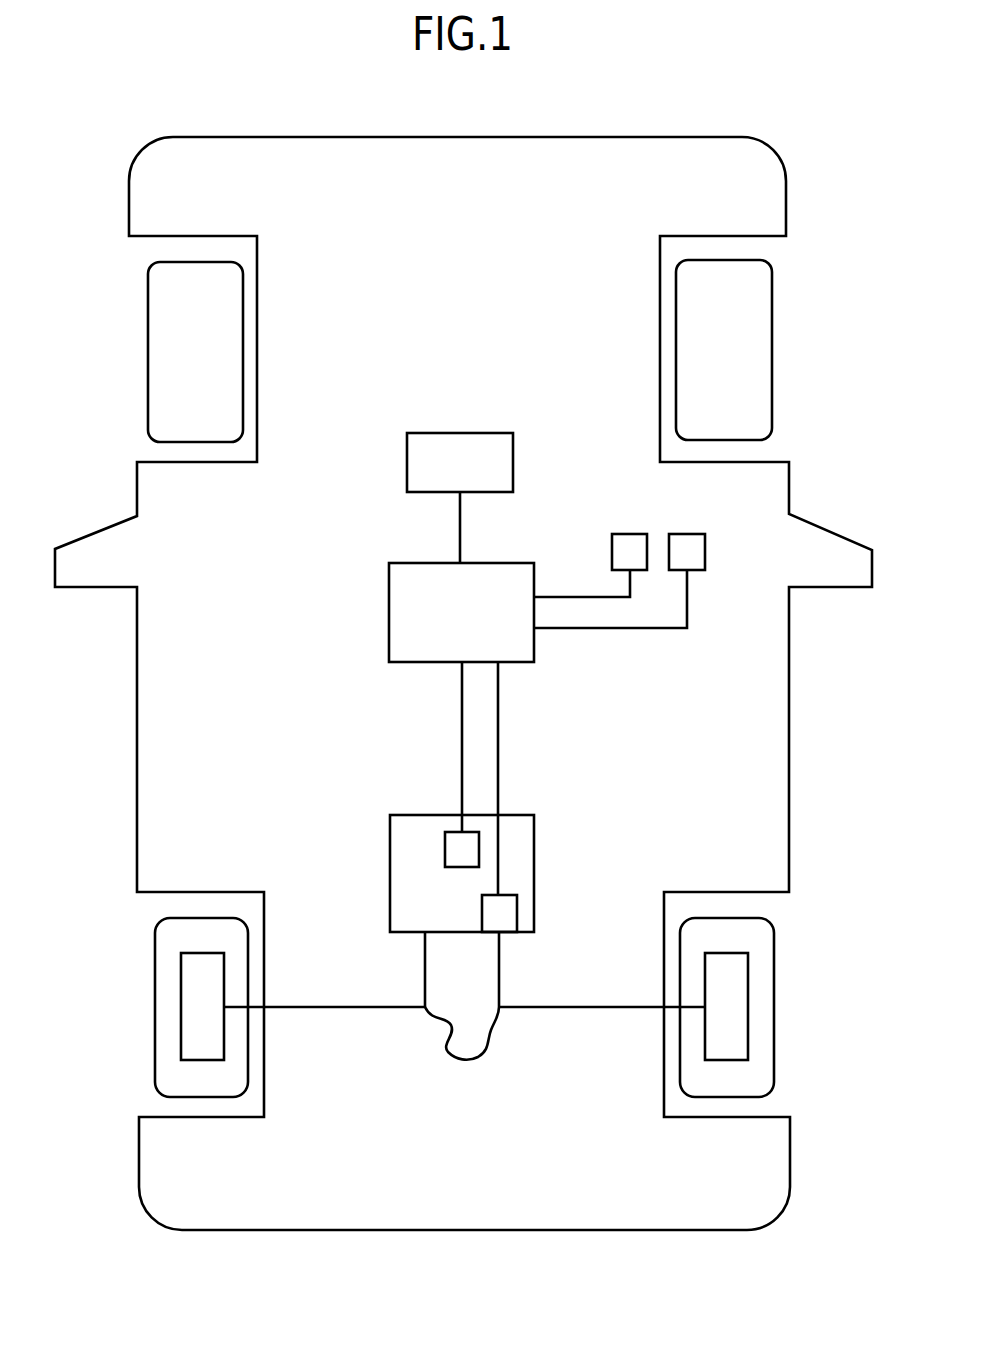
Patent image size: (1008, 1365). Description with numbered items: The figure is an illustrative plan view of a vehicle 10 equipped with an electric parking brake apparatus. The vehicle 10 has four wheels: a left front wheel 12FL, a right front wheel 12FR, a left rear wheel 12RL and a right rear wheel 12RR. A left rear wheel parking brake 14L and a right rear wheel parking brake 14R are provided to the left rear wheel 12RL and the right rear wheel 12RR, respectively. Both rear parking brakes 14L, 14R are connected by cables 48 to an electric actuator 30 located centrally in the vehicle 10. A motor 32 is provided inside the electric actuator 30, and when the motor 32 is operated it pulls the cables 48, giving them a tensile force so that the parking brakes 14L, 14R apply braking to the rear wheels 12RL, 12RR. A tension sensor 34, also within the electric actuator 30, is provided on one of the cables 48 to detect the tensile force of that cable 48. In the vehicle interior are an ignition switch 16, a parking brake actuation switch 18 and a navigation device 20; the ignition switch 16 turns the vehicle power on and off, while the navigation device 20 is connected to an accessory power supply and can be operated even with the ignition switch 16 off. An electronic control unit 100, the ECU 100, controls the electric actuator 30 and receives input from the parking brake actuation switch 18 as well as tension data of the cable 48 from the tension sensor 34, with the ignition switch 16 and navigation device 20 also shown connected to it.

The vehicle 10 is at (485, 1352).
The left front wheel 12FL is at (148, 352).
The right front wheel 12FR is at (772, 346).
The left rear wheel 12RL is at (155, 987).
The right rear wheel 12RR is at (774, 983).
The left rear wheel parking brake 14L is at (181, 1038).
The right rear wheel parking brake 14R is at (748, 1030).
The ignition switch 16 is at (705, 548).
The parking brake actuation switch 18 is at (626, 532).
The navigation device 20 is at (456, 430).
The electric actuator 30 is at (534, 835).
The motor 32 is at (458, 867).
The tension sensor 34 is at (517, 908).
The cables 48 is at (464, 1013).
The electronic control unit 100 is at (534, 645).